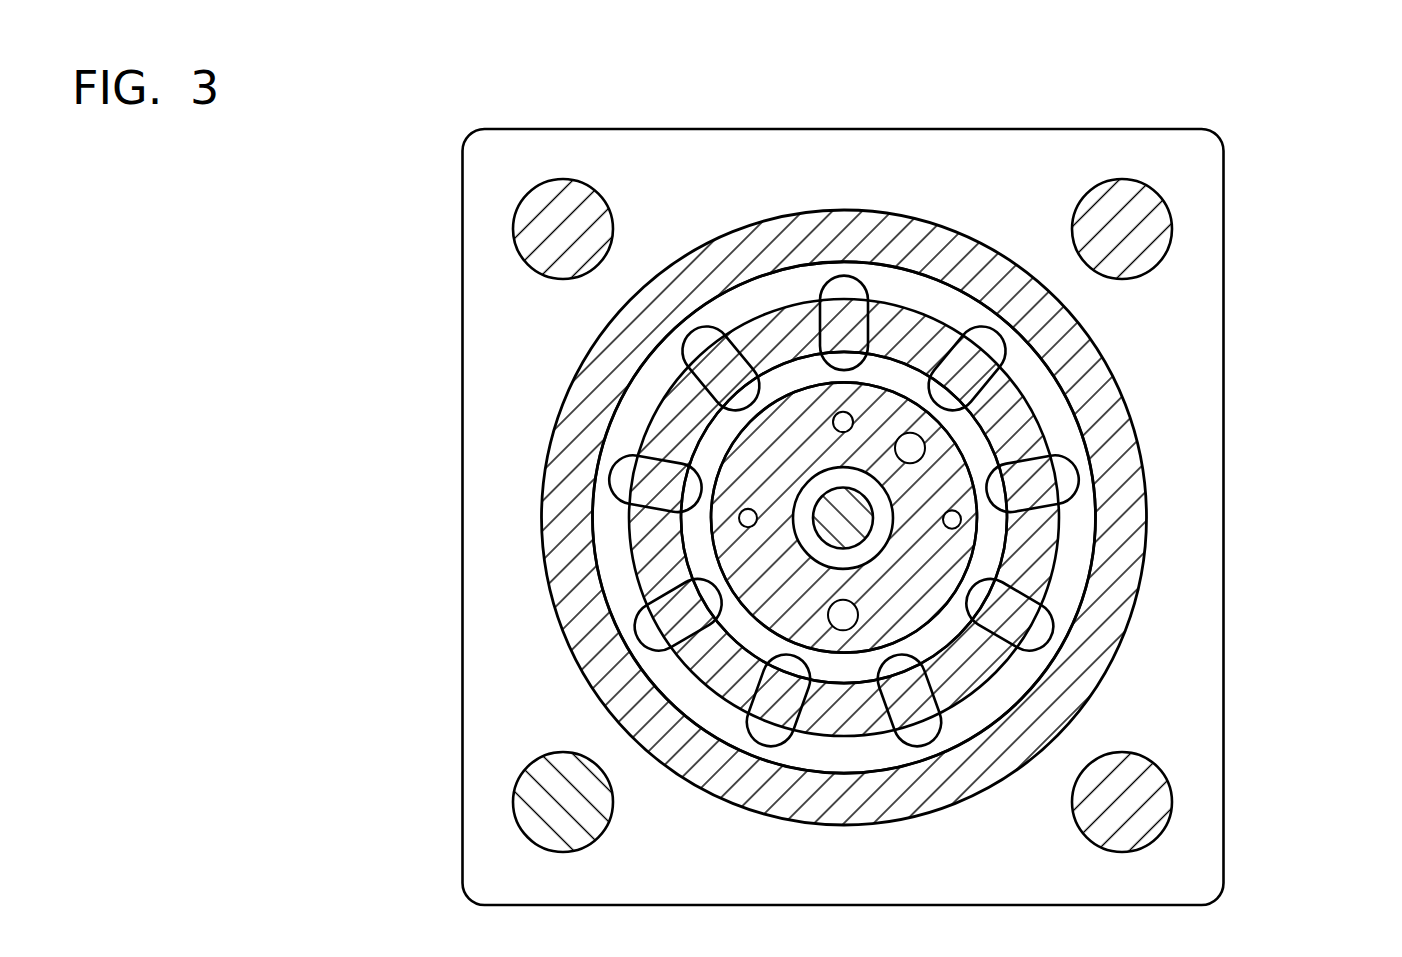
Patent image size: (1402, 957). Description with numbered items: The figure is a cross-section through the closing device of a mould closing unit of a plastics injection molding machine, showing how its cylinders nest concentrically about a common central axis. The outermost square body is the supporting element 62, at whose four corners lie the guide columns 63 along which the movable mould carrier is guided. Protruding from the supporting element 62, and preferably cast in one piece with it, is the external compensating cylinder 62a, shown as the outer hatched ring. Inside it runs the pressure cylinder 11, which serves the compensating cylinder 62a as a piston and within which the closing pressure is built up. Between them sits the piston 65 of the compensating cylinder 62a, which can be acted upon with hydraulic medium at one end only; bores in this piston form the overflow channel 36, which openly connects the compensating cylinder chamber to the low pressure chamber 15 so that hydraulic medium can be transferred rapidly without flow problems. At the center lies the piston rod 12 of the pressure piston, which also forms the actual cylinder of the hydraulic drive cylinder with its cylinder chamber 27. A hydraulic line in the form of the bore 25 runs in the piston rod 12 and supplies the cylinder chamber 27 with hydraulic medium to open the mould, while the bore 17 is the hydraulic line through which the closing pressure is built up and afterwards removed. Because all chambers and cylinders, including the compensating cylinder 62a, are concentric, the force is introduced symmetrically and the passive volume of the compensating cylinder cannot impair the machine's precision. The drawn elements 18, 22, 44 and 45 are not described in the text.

The pressure cylinder 11 is at (837, 517).
The piston rod 12 is at (844, 636).
The low pressure chamber 15 is at (844, 515).
The bore 17 is at (615, 488).
The hole 18 is at (1023, 385).
The shaft 22 is at (796, 689).
The bore 25 is at (828, 745).
The cylinder chamber 27 is at (997, 538).
The overflow channel 36 is at (903, 446).
The hole 44 is at (837, 286).
The pin 45 is at (1092, 460).
The supporting element 62 is at (839, 517).
The compensating cylinder 62a is at (970, 517).
The guide columns 63 is at (838, 496).
The piston 65 is at (785, 517).